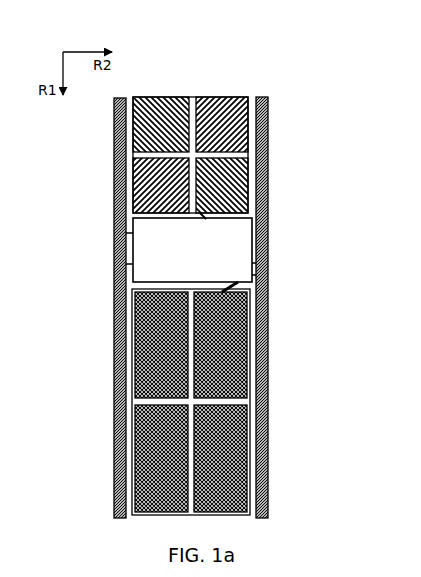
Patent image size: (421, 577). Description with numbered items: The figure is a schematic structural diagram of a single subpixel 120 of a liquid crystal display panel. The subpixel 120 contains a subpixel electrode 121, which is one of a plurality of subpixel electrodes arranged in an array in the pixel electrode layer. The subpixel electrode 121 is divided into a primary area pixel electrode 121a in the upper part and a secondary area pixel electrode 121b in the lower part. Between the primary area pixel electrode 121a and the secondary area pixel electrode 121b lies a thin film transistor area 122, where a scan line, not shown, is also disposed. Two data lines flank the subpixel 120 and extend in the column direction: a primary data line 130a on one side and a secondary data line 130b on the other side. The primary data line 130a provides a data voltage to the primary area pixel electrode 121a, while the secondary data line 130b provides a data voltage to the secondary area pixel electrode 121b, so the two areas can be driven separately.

The subpixel 120 is at (181, 74).
The subpixel electrode 121 is at (332, 392).
The primary area pixel electrode 121a is at (242, 185).
The secondary area pixel electrode 121b is at (250, 399).
The thin film transistor area 122 is at (137, 251).
The primary data line 130a is at (121, 272).
The secondary data line 130b is at (257, 97).